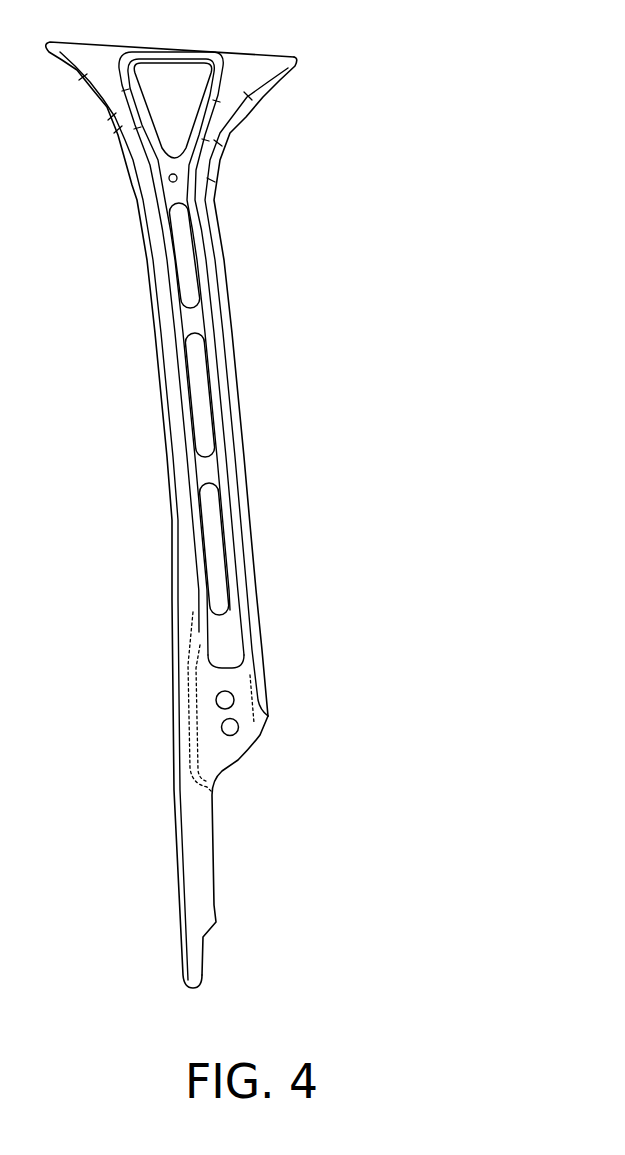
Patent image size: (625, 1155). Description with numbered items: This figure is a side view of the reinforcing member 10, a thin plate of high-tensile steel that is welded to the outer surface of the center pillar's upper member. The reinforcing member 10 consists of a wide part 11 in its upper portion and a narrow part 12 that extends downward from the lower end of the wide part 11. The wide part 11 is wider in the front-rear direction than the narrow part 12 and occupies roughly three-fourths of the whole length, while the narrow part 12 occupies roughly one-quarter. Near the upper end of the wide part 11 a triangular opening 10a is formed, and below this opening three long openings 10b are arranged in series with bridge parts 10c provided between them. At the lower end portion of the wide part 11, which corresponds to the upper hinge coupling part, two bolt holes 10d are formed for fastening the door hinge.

The reinforcing member 10 is at (350, 170).
The triangular opening 10a is at (182, 70).
The long openings 10b is at (194, 262).
The bridge parts 10c is at (188, 322).
The bolt holes 10d is at (238, 725).
The wide part 11 is at (238, 418).
The narrow part 12 is at (213, 880).